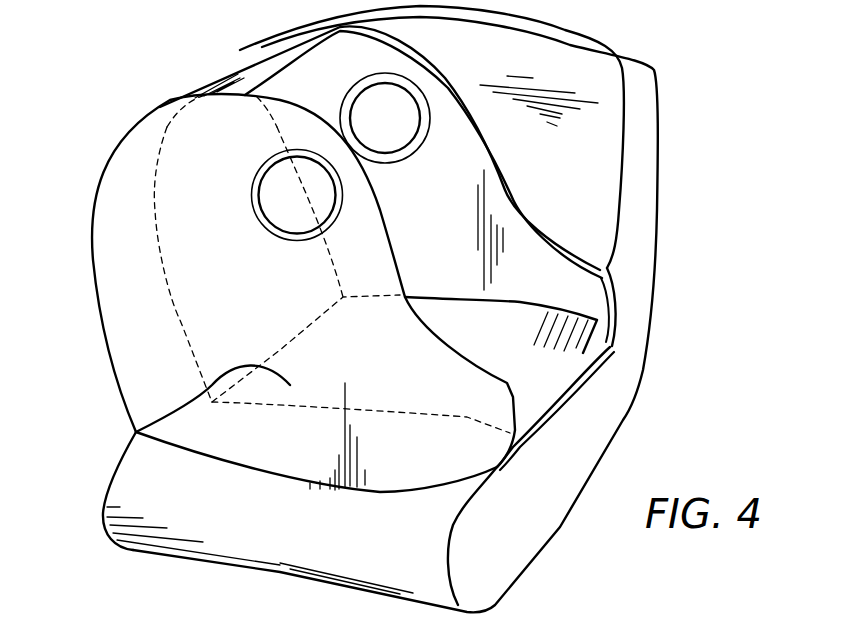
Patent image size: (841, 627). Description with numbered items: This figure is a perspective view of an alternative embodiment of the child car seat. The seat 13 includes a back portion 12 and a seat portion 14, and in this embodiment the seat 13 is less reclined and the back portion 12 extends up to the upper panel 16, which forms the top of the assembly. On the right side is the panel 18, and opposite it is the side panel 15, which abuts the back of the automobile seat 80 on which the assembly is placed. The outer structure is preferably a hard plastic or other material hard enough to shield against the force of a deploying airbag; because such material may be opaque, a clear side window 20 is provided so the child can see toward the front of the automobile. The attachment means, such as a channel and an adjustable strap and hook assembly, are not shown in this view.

The back portion 12 is at (203, 298).
The seat 13 is at (134, 428).
The seat portion 14 is at (437, 400).
The side panel 15 is at (533, 281).
The top panel 16 is at (240, 70).
The panel 18 is at (410, 370).
The clear side window 20 is at (364, 91).
The automobile seat 80 is at (603, 160).